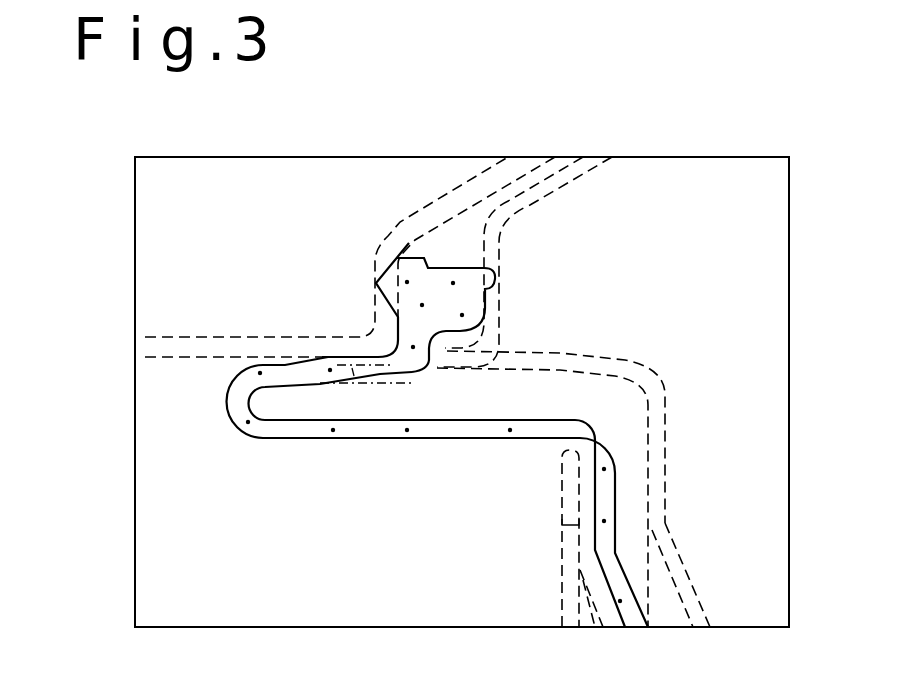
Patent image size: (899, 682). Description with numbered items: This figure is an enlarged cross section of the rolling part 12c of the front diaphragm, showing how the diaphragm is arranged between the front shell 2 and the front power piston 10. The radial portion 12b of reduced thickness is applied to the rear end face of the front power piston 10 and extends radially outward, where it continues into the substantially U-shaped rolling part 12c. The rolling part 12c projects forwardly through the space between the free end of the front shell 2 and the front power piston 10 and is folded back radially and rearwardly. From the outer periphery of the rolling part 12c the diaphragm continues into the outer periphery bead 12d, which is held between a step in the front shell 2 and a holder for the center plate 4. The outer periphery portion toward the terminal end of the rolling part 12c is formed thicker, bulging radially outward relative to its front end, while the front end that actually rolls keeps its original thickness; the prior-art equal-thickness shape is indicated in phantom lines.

The front shell 2 is at (160, 333).
The center plate 4 is at (663, 397).
The front power piston 10 is at (565, 592).
The radial portion 12b is at (626, 622).
The rolling part 12c is at (232, 405).
The outer periphery bead 12d is at (414, 263).